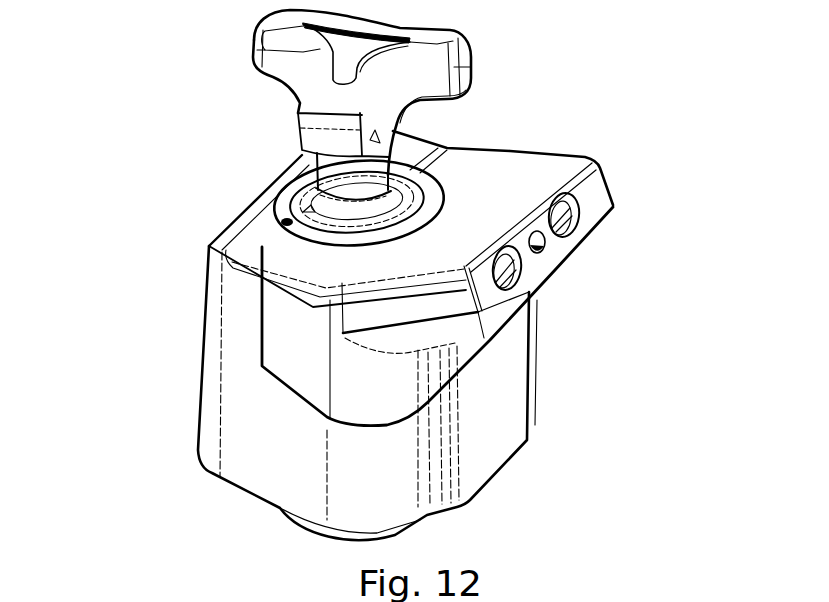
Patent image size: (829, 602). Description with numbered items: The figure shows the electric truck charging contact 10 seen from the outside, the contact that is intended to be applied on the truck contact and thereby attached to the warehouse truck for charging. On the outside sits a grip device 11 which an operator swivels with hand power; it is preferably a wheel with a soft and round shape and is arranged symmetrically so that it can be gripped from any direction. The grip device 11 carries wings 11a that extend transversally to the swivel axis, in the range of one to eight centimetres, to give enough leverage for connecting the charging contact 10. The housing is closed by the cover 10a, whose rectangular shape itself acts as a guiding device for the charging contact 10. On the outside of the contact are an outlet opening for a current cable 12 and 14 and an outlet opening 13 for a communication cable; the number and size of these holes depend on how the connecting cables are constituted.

The truck charging contact 10 is at (538, 123).
The cover 10a is at (240, 410).
The grip device 11 is at (353, 50).
The wings 11a is at (458, 74).
The outlet opening for a current cable 12 is at (578, 218).
The outlet opening for a communication cable 13 is at (546, 246).
The outlet opening for a current cable 14 is at (524, 274).